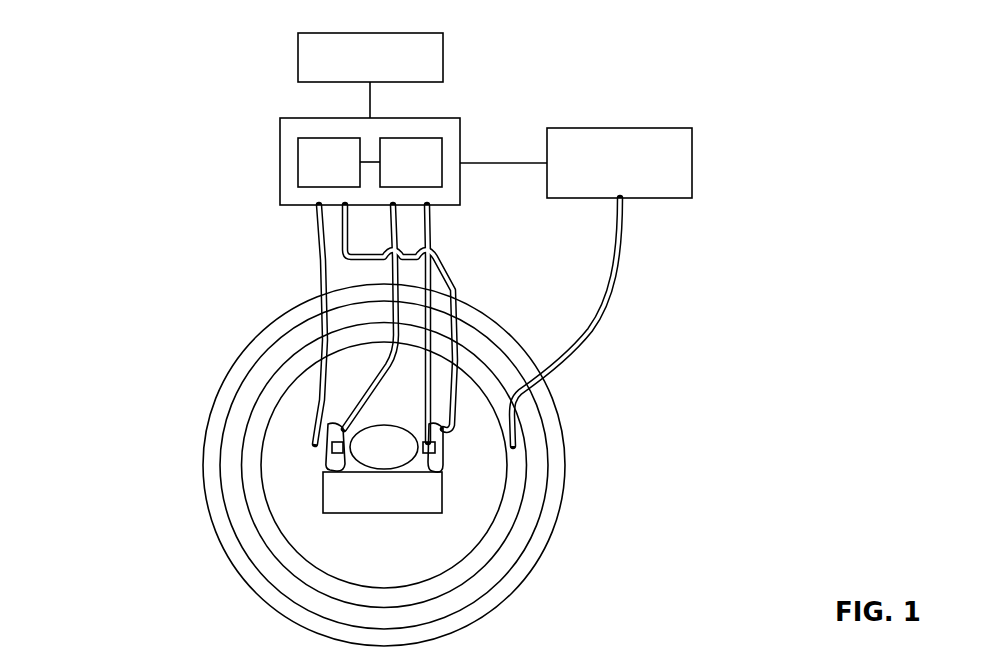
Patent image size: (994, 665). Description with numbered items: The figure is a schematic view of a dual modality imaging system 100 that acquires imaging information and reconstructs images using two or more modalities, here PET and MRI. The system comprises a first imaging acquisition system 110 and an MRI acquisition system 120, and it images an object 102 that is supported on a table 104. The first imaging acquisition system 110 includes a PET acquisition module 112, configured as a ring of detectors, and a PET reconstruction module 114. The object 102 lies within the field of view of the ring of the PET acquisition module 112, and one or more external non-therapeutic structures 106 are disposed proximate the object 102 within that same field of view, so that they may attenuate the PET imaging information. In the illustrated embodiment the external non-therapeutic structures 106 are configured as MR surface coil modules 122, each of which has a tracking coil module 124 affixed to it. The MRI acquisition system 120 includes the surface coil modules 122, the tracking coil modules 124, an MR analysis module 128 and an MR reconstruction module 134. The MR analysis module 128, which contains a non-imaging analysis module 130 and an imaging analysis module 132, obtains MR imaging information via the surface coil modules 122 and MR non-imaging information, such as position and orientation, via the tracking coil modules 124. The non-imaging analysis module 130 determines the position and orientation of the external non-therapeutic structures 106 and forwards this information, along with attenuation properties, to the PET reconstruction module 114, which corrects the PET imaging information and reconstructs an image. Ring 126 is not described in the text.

The dual modality imaging system 100 is at (150, 40).
The object 102 is at (385, 458).
The table 104 is at (400, 490).
The external non-therapeutic structure 106 is at (455, 480).
The first imaging acquisition system 110 is at (541, 457).
The PET acquisition module 112 is at (520, 474).
The PET reconstruction module 114 is at (600, 175).
The MRI acquisition system 120 is at (202, 352).
The MR surface coil module 122 is at (327, 456).
The tracking coil module 124 is at (325, 467).
The outer coil 126 is at (205, 446).
The MR analysis module 128 is at (280, 163).
The non-imaging analysis module 130 is at (391, 175).
The imaging analysis module 132 is at (309, 175).
The MR reconstruction module 134 is at (350, 70).